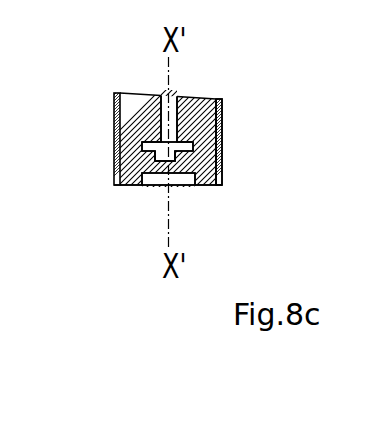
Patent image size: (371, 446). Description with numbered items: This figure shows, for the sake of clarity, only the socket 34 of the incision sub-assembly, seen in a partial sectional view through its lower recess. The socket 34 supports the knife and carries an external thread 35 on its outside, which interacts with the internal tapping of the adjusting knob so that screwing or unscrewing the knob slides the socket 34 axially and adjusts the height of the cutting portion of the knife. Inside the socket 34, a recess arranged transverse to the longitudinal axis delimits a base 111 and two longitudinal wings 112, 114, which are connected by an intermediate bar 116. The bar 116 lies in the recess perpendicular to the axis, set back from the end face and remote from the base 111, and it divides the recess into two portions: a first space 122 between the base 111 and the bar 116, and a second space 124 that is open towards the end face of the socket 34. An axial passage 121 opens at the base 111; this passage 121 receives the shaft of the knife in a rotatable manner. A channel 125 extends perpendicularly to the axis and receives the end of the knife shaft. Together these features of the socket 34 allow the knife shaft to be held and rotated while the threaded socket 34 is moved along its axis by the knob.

The socket 34 is at (233, 117).
The external thread 35 is at (222, 160).
The base 111 is at (153, 156).
The longitudinal wing 112 is at (197, 187).
The longitudinal wing 114 is at (135, 187).
The intermediate bar 116 is at (163, 162).
The axial passage 121 is at (175, 113).
The first space 122 is at (182, 142).
The second space 124 is at (185, 187).
The channel 125 is at (172, 142).